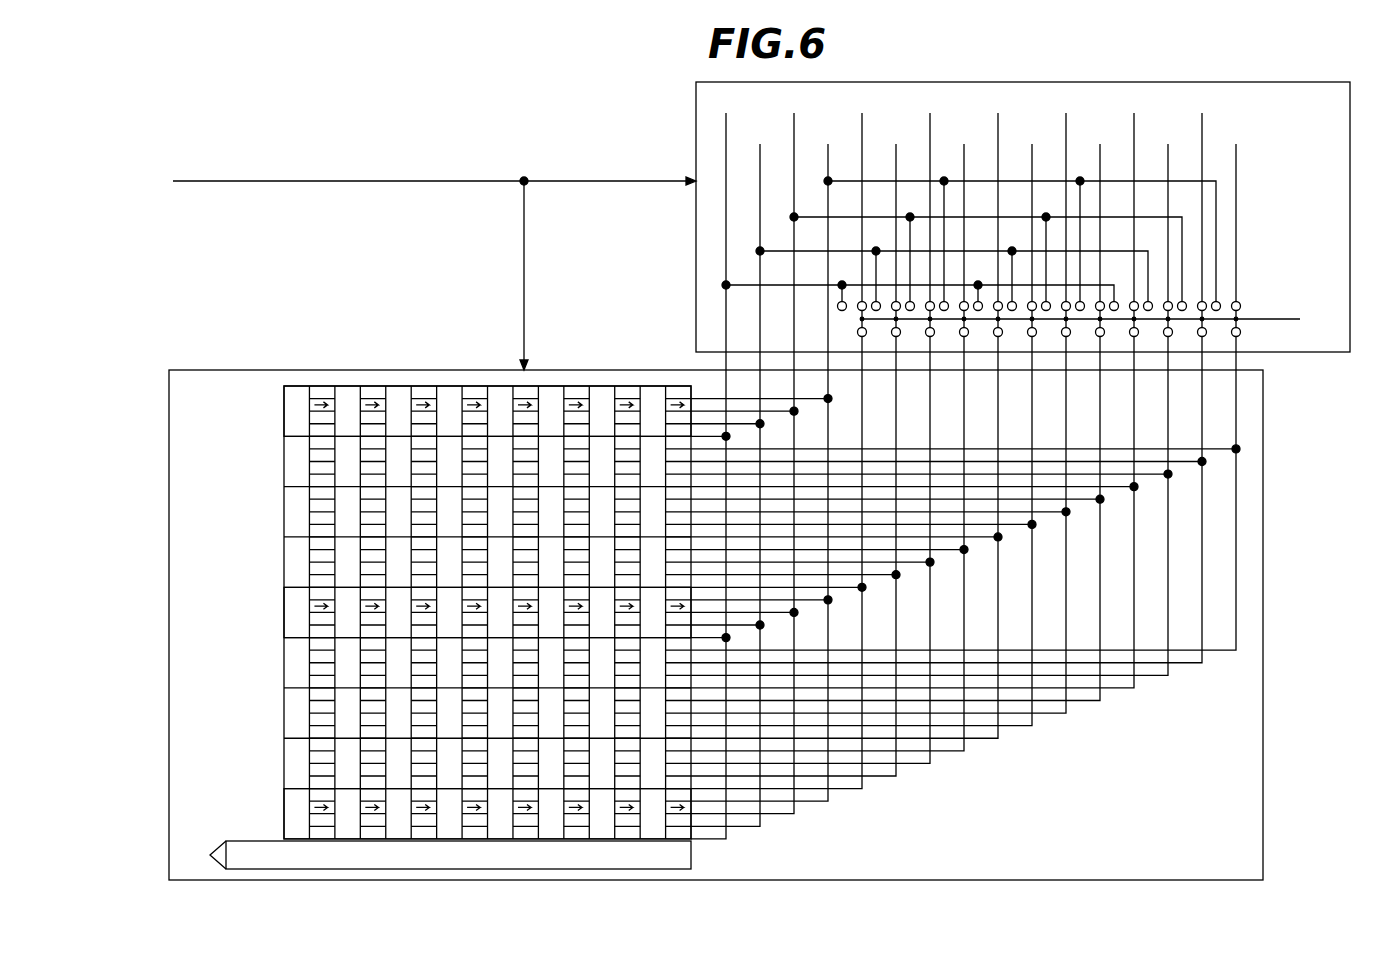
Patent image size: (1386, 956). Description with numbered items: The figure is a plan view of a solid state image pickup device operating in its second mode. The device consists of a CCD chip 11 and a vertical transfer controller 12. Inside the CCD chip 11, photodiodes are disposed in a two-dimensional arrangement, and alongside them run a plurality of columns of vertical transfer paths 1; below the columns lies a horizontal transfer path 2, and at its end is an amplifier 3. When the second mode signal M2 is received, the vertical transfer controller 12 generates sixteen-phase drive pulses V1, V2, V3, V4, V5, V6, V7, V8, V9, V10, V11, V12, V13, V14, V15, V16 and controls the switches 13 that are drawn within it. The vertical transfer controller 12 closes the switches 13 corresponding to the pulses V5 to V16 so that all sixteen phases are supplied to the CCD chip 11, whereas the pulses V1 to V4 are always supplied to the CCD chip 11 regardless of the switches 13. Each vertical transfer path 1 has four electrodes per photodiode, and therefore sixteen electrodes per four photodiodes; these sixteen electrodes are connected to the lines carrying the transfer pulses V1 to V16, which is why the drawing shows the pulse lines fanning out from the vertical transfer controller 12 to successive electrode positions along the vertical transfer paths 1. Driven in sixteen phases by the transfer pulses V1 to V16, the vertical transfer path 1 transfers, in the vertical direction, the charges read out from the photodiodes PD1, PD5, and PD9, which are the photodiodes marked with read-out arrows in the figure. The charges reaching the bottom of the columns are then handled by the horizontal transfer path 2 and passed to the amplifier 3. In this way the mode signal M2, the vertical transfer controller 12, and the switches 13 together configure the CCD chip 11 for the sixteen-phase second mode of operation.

The vertical transfer path 1 is at (325, 386).
The horizontal transfer path 2 is at (693, 864).
The amplifier 3 is at (210, 864).
The CCD chip 11 is at (1263, 733).
The vertical transfer controller 12 is at (1318, 355).
The switches 13 is at (1281, 319).
The mode signal M2 is at (345, 181).
The photodiode PD1 is at (284, 807).
The photodiode PD5 is at (284, 605).
The photodiode PD9 is at (284, 403).
The transfer pulse V1 is at (715, 462).
The transfer pulse V2 is at (732, 471).
The transfer pulse V3 is at (749, 450).
The transfer pulse V4 is at (766, 458).
The transfer pulse V5 is at (783, 437).
The transfer pulse V6 is at (800, 446).
The transfer pulse V7 is at (817, 424).
The transfer pulse V8 is at (834, 433).
The transfer pulse V9 is at (851, 412).
The transfer pulse V10 is at (872, 421).
The transfer pulse V11 is at (889, 399).
The transfer pulse V12 is at (906, 408).
The transfer pulse V13 is at (923, 387).
The transfer pulse V14 is at (940, 395).
The transfer pulse V15 is at (957, 374).
The transfer pulse V16 is at (974, 383).